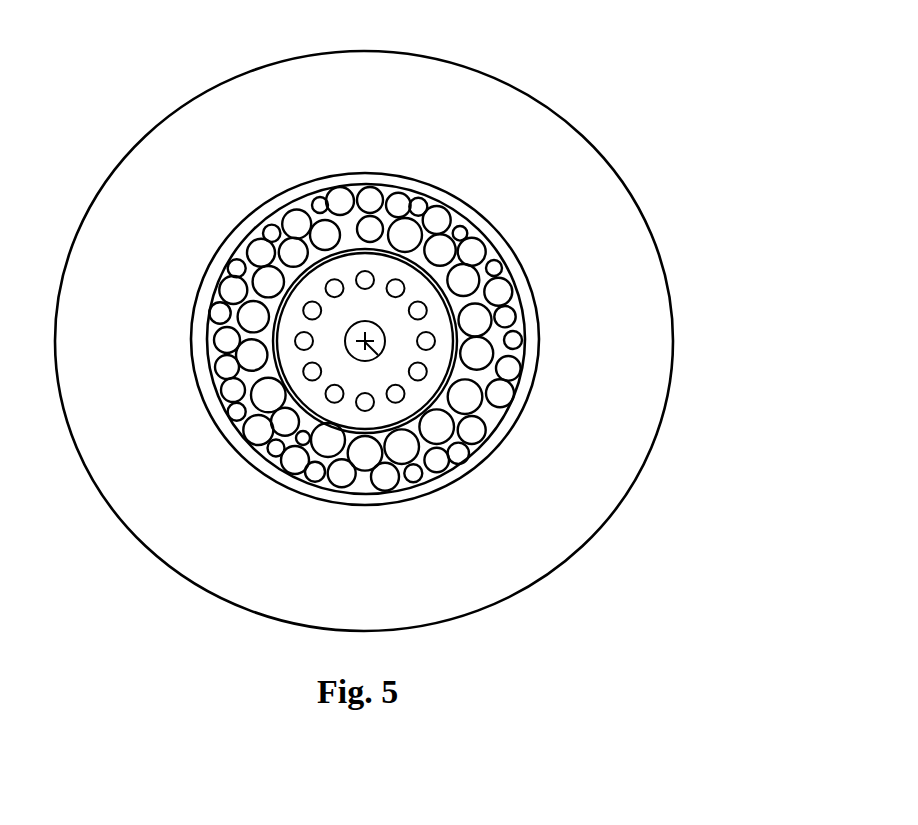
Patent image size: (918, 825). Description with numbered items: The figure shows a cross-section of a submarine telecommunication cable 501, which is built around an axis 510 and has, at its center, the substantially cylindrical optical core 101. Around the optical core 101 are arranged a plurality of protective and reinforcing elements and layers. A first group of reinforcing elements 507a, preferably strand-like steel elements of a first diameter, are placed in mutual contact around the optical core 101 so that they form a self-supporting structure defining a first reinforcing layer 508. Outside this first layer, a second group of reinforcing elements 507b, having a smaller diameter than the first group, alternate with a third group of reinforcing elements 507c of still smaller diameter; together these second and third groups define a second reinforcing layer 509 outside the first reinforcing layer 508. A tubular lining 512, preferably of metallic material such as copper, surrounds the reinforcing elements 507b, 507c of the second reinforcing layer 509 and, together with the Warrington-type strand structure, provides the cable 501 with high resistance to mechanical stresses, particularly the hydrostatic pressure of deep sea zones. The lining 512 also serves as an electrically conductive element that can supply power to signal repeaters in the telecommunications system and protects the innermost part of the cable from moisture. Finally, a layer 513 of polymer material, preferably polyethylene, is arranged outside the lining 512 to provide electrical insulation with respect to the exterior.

The cable 501 is at (655, 133).
The optical core 101 is at (366, 236).
The first group of reinforcing elements 507a is at (252, 357).
The second group of reinforcing elements 507b is at (232, 388).
The third group of reinforcing elements 507c is at (236, 420).
The first reinforcing layer 508 is at (282, 424).
The second reinforcing layer 509 is at (290, 466).
The axis 510 is at (378, 355).
The tubular lining 512 is at (482, 453).
The layer of polymer material 513 is at (640, 350).